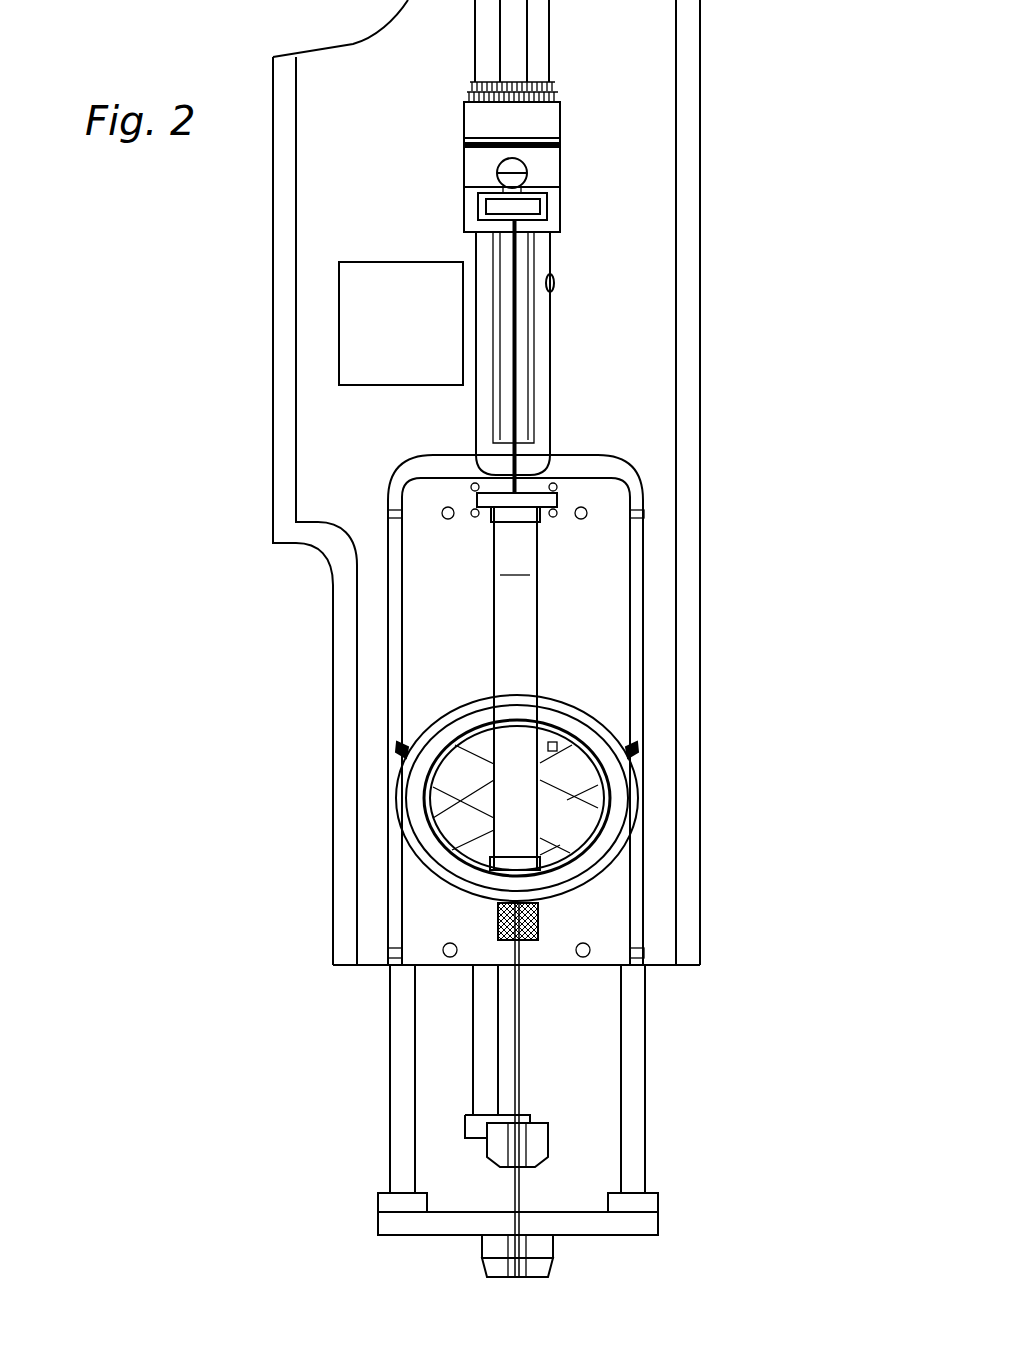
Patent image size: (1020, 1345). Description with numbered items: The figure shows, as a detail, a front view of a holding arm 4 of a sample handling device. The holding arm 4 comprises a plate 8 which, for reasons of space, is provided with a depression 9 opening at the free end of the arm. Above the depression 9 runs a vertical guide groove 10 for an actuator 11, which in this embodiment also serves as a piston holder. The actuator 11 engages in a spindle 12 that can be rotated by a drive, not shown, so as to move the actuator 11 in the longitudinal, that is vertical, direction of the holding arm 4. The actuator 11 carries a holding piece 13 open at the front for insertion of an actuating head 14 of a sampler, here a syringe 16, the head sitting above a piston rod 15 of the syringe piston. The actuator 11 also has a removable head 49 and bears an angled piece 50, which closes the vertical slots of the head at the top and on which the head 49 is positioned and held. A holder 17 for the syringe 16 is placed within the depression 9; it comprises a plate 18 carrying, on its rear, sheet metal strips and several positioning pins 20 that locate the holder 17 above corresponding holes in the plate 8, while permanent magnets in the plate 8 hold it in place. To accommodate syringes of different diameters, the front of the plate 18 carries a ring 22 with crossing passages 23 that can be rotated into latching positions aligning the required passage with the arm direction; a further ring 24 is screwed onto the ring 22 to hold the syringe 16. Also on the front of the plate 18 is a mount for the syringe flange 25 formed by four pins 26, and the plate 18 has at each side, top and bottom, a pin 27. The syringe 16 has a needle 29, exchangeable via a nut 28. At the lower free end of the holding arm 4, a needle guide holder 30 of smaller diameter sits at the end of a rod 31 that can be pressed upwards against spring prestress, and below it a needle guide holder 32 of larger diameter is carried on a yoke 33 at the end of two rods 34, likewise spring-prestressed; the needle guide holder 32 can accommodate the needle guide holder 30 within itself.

The holding arm 4 is at (705, 48).
The plate 8 is at (660, 114).
The depression 9 is at (388, 613).
The vertical guide groove 10 is at (554, 285).
The actuator 11 is at (460, 105).
The spindle 12 is at (527, 378).
The holding piece 13 is at (548, 204).
The actuating head 14 is at (484, 210).
The piston rod 15 is at (517, 262).
The syringe 16 is at (550, 624).
The holder 17 is at (645, 559).
The plate 18 is at (612, 683).
The positioning pins 20 is at (583, 958).
The ring 22 is at (600, 802).
The crossing passages 23 is at (580, 775).
The ring 24 is at (610, 843).
The syringe flange 25 is at (557, 500).
The pins 26 is at (473, 517).
The pin 27 is at (645, 513).
The nut 28 is at (540, 918).
The needle 29 is at (521, 1038).
The needle guide holder 30 is at (540, 1148).
The rod 31 is at (487, 1054).
The needle guide holder 32 is at (548, 1245).
The yoke 33 is at (445, 1223).
The rods 34 is at (632, 1090).
The removable head 49 is at (555, 160).
The angled piece 50 is at (555, 136).